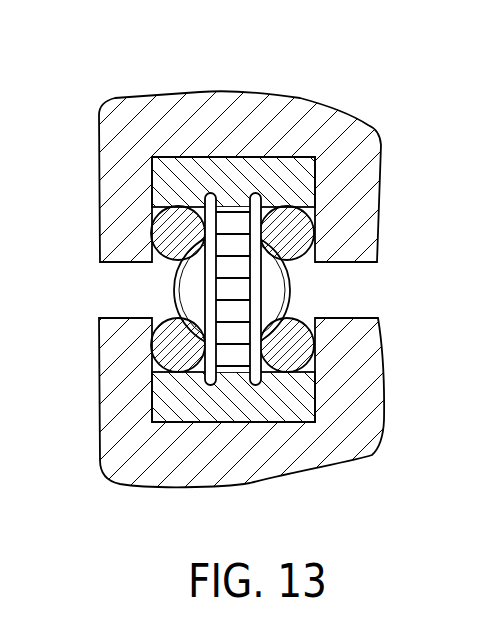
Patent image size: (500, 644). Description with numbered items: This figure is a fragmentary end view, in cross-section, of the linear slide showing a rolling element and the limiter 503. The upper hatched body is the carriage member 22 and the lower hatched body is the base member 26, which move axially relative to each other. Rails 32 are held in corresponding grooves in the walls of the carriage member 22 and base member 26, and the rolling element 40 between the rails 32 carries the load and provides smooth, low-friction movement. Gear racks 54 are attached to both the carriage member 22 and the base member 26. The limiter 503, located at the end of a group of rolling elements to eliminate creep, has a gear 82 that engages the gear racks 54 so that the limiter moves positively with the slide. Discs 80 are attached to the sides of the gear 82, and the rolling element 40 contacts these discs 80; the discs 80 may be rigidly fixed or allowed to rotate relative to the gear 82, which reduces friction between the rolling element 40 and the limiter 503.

The carriage member 22 is at (123, 125).
The base member 26 is at (345, 427).
The gear rack 54 is at (283, 173).
The rail 32 is at (298, 350).
The rolling element 40 is at (268, 289).
The gear 82 is at (238, 312).
The disc 80 is at (255, 385).
The limiter 503 is at (108, 293).